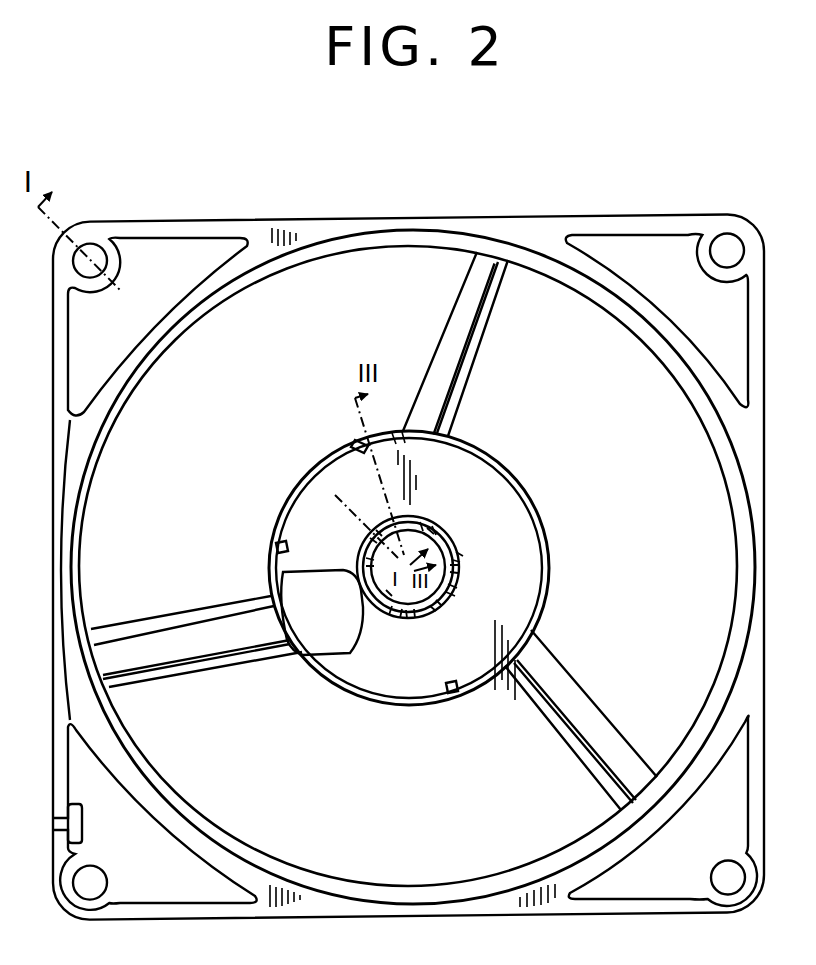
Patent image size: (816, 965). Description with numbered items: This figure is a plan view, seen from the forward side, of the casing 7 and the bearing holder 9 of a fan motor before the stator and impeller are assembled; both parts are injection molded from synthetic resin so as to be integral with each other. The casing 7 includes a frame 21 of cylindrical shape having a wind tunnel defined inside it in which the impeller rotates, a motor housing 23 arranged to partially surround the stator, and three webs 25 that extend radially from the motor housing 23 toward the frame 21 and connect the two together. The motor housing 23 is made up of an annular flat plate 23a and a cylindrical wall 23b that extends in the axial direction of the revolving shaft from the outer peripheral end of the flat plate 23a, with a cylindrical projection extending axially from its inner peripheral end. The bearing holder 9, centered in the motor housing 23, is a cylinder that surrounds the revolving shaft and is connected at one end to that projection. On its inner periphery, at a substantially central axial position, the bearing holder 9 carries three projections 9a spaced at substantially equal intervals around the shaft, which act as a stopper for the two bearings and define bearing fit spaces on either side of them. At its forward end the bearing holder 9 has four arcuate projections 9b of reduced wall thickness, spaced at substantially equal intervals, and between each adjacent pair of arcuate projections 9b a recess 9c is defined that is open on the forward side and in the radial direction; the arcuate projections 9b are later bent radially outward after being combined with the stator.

The casing 7 is at (282, 211).
The frame 21 is at (185, 234).
The motor housing 23 is at (290, 513).
The annular flat plate 23a is at (357, 466).
The cylindrical wall 23b is at (385, 430).
The webs 25 is at (460, 327).
The bearing holder 9 is at (447, 537).
The projections 9a is at (417, 520).
The arcuate projections 9b is at (427, 530).
The recesses 9c is at (378, 530).